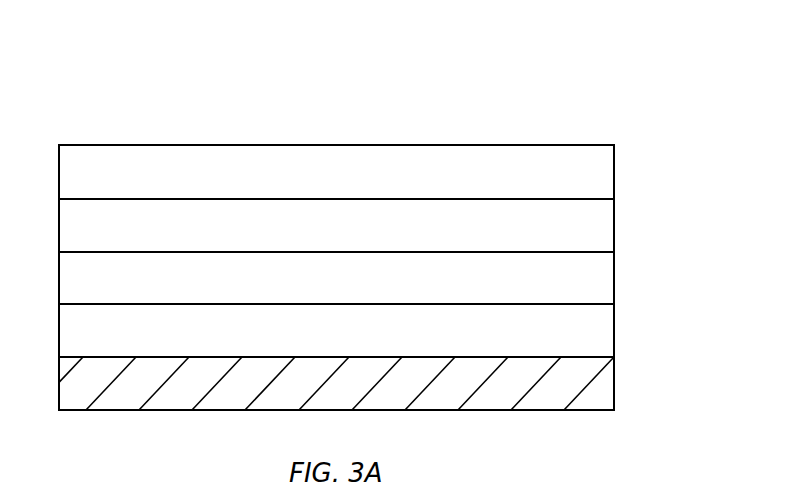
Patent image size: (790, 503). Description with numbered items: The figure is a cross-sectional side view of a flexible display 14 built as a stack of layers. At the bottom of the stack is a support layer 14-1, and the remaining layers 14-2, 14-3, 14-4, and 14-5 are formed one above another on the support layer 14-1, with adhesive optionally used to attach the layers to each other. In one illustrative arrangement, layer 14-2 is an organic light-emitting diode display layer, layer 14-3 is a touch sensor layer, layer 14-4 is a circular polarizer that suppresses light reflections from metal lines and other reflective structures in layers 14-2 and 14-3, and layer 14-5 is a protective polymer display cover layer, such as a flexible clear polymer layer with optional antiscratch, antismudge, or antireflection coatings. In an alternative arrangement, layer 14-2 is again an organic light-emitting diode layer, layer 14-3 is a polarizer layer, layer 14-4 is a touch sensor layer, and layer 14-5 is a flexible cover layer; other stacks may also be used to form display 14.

The display 14 is at (547, 85).
The support layer 14-1 is at (605, 381).
The organic light-emitting diode display layer 14-2 is at (605, 328).
The touch sensor layer 14-3 is at (605, 274).
The circular polarizer 14-4 is at (605, 220).
The protective polymer display cover layer 14-5 is at (605, 170).